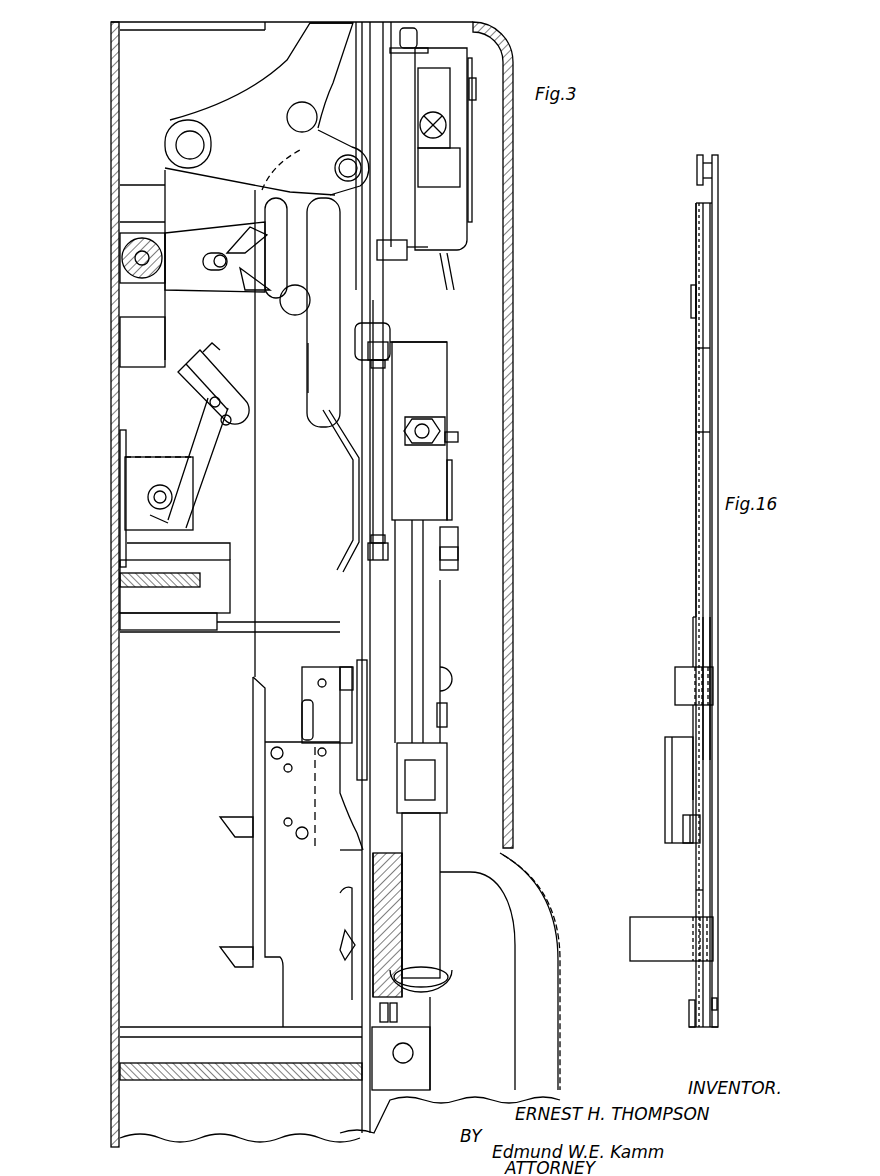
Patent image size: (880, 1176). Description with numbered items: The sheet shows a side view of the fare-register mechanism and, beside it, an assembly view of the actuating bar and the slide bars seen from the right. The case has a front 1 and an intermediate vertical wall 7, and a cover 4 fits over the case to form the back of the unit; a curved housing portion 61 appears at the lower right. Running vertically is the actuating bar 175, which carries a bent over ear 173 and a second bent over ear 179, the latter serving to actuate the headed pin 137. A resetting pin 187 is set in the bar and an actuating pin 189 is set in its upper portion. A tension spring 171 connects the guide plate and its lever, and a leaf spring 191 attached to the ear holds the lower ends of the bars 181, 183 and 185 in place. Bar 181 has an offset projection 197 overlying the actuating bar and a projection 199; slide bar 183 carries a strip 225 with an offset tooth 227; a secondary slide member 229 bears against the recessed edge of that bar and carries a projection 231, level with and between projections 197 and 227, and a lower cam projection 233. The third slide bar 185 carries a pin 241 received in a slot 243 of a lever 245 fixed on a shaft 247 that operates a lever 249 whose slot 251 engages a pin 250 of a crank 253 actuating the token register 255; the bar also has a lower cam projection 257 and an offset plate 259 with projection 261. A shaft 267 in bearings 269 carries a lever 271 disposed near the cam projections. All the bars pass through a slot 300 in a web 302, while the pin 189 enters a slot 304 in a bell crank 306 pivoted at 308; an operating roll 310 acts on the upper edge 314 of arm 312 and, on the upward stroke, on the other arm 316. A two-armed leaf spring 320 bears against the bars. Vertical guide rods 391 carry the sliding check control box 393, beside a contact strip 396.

In FIG. 3, the front of a case 1 is at (110, 660).
In FIG. 3, the cover 4 is at (512, 508).
In FIG. 3, the intermediate vertical wall 7 is at (170, 78).
In FIG. 3, the casing 61 is at (508, 905).
In FIG. 3, the headed pin 137 is at (348, 715).
In FIG. 3, the tension spring 171 is at (362, 972).
In FIG. 3, the bent over ear 173 is at (340, 895).
In FIG. 16, the bent over ear 173 is at (650, 955).
In FIG. 16, the actuating bar 175 is at (718, 645).
In FIG. 16, the second bent over ear 179 is at (678, 682).
In FIG. 16, the bar 181 is at (710, 628).
In FIG. 16, the slide bar 183 is at (703, 763).
In FIG. 16, the third slide bar 185 is at (697, 560).
In FIG. 3, the resetting pin 187 is at (290, 312).
In FIG. 16, the resetting pin 187 is at (691, 315).
In FIG. 3, the actuating pin 189 is at (358, 183).
In FIG. 16, the actuating pin 189 is at (697, 180).
In FIG. 3, the leaf spring 191 is at (348, 945).
In FIG. 16, the projection 197 is at (712, 828).
In FIG. 16, the projection 199 is at (715, 1005).
In FIG. 16, the strip 225 is at (694, 642).
In FIG. 16, the projection or tooth 227 is at (682, 845).
In FIG. 16, the secondary slide member 229 is at (705, 897).
In FIG. 16, the projection 231 is at (703, 823).
In FIG. 16, the cam projection 233 is at (700, 1030).
In FIG. 3, the pin 241 is at (222, 270).
In FIG. 3, the slot 243 is at (222, 258).
In FIG. 3, the lever 245 is at (180, 240).
In FIG. 3, the shaft 247 is at (120, 287).
In FIG. 3, the lever 249 is at (193, 385).
In FIG. 3, the pin 250 is at (218, 400).
In FIG. 3, the slot 251 is at (215, 358).
In FIG. 3, the crank 253 is at (205, 452).
In FIG. 3, the token register 255 is at (193, 512).
In FIG. 16, the cam projection 257 is at (692, 1028).
In FIG. 16, the offset plate 259 is at (680, 770).
In FIG. 16, the projection 261 is at (668, 838).
In FIG. 3, the shaft 267 is at (405, 1083).
In FIG. 3, the bearings 269 is at (412, 1062).
In FIG. 3, the lever 271 is at (395, 1028).
In FIG. 3, the slot 300 is at (262, 634).
In FIG. 3, the web 302 is at (268, 622).
In FIG. 3, the slot 304 is at (312, 161).
In FIG. 3, the bell crank 306 is at (260, 139).
In FIG. 3, the pivot 308 is at (192, 132).
In FIG. 3, the operating roll 310 is at (316, 110).
In FIG. 3, the arm 312 is at (325, 190).
In FIG. 3, the upper edge 314 is at (325, 135).
In FIG. 3, the arm 316 is at (335, 53).
In FIG. 3, the leaf spring 320 is at (350, 498).
In FIG. 3, the vertical guide rods 391 is at (415, 212).
In FIG. 3, the check control box 393 is at (458, 236).
In FIG. 3, the contact strip 396 is at (472, 112).